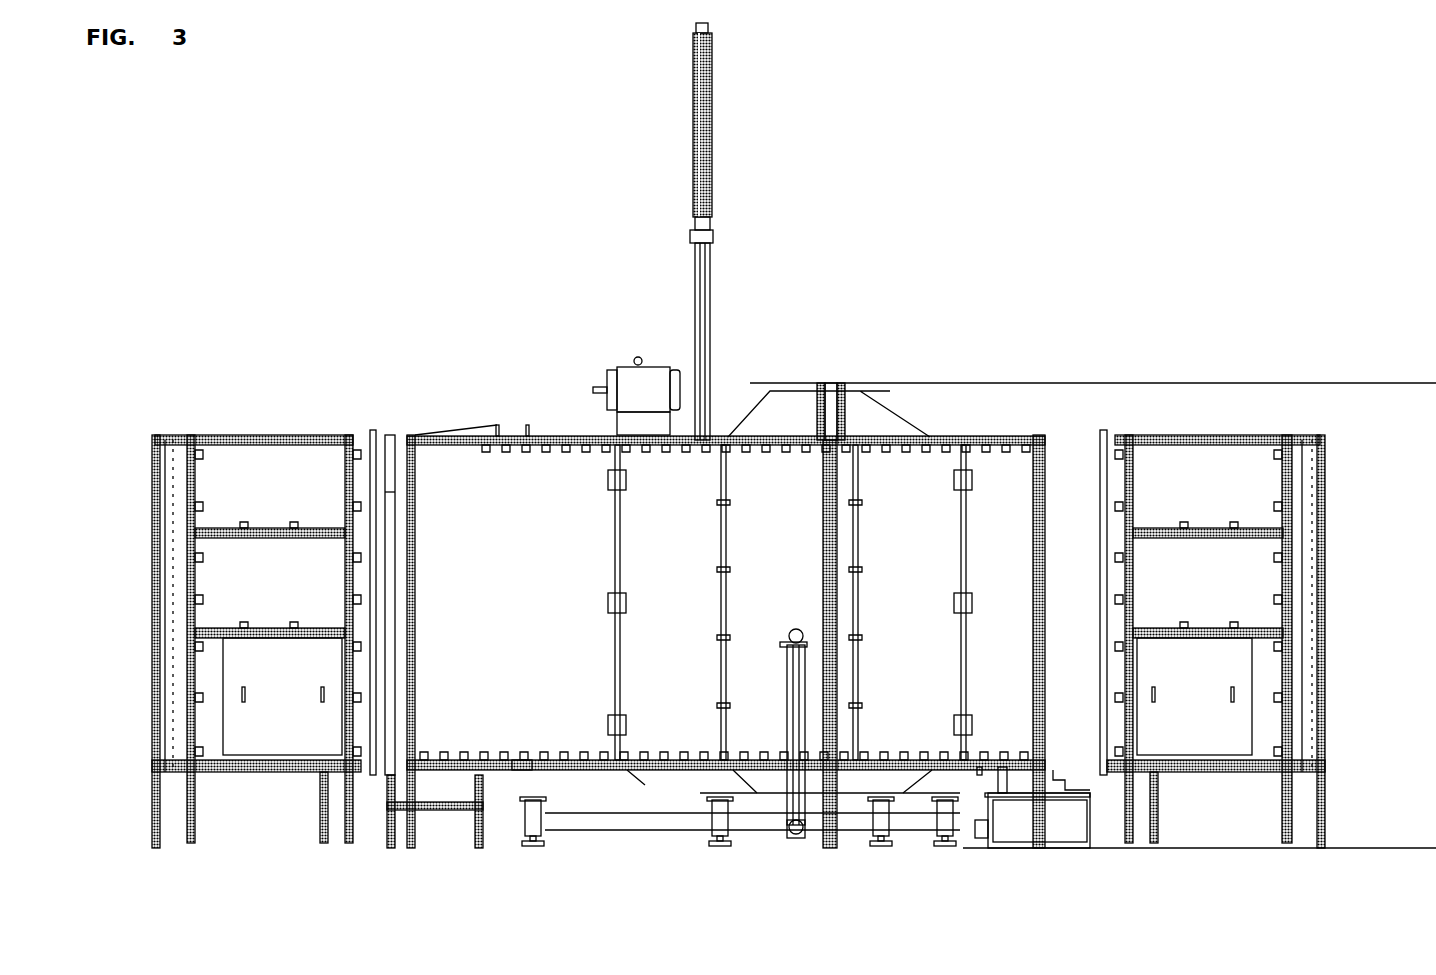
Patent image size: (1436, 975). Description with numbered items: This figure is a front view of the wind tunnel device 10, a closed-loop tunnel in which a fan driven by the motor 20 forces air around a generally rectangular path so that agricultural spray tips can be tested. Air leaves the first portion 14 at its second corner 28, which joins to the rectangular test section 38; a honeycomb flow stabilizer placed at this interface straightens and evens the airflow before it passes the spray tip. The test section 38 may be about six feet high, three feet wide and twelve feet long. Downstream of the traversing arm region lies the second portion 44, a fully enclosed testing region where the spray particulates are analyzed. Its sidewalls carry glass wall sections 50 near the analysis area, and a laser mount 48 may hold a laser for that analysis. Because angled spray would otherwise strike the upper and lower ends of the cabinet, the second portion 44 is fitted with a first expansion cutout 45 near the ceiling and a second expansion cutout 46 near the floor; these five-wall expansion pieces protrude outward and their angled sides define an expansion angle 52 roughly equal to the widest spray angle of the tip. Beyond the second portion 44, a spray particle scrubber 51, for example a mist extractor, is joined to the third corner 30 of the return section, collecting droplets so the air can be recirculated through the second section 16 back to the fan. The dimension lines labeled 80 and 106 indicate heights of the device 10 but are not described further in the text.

The wind tunnel device 10 is at (1015, 160).
The first portion 14 is at (140, 548).
The second section 16 is at (540, 347).
The motor 20 is at (630, 363).
The second corner 28 is at (250, 772).
The third corner 30 is at (518, 760).
The test section 38 is at (537, 735).
The second portion 44 is at (890, 612).
The first expansion cutout 45 is at (855, 385).
The second expansion cutout 46 is at (908, 795).
The laser mount 48 is at (797, 787).
The glass wall sections 50 is at (940, 478).
The spray particle scrubber 51 is at (1080, 740).
The expansion angle 52 is at (745, 440).
The mast height dimension 80 is at (720, 23).
The overall height dimension 106 is at (1393, 383).